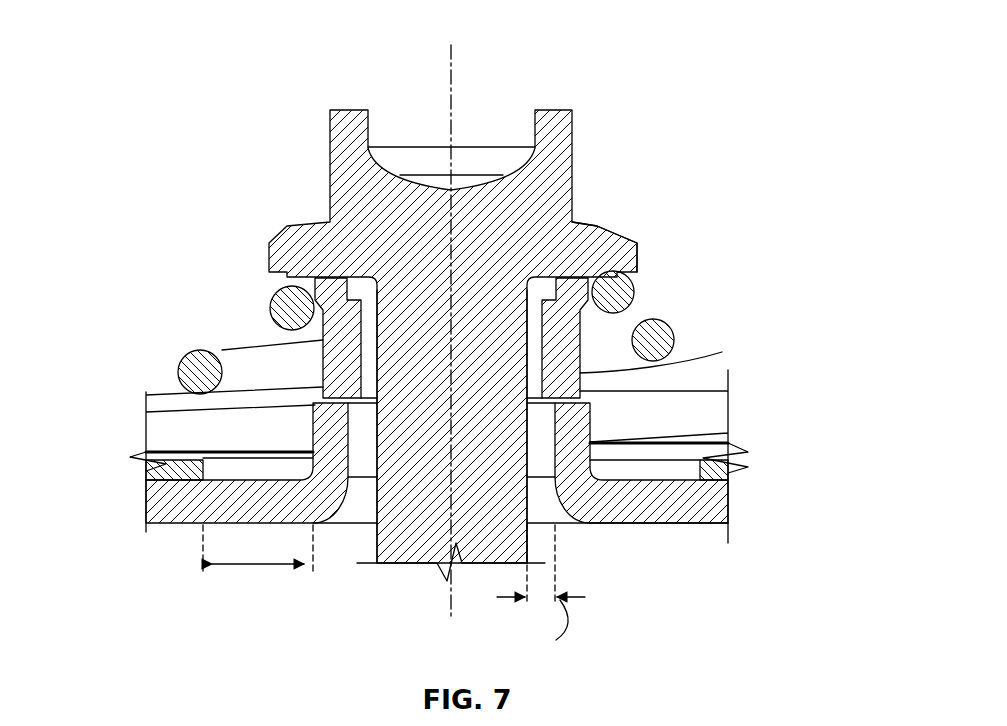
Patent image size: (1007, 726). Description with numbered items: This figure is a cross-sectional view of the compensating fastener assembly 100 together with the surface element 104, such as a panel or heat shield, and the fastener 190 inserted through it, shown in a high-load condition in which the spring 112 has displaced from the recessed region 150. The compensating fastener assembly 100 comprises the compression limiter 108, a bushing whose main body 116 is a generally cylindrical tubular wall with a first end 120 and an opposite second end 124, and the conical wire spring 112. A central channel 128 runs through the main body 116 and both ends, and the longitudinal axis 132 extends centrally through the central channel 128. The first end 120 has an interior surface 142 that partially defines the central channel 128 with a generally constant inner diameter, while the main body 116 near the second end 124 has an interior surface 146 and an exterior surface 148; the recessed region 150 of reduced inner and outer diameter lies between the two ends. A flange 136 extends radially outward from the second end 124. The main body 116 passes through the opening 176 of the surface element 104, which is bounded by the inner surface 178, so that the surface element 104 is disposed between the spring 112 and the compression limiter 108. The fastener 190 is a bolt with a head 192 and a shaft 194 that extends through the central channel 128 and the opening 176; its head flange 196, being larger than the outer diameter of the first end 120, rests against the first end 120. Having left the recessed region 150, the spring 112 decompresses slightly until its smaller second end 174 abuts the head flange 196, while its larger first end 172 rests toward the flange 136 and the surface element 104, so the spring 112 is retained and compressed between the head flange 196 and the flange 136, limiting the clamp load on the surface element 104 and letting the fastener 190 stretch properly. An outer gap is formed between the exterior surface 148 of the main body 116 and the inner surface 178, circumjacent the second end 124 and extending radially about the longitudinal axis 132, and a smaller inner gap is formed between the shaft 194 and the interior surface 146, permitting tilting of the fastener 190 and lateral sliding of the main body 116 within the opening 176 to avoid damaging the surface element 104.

The compensating fastener assembly 100 is at (128, 70).
The longitudinal axis 132 is at (447, 64).
The fastener 190 is at (340, 168).
The head 192 is at (552, 135).
The shaft 194 is at (508, 510).
The interior surface 142 is at (358, 292).
The exterior surface 148 is at (320, 372).
The first end 120 is at (560, 278).
The head flange 196 is at (622, 248).
The second end 174 is at (622, 290).
The recessed region 150 is at (655, 303).
The opening 176 is at (255, 416).
The spring 112 is at (185, 378).
The main body 116 is at (592, 422).
The interior surface 146 is at (542, 455).
The inner surface 178 is at (218, 470).
The first end 172 is at (155, 480).
The surface element 104 is at (722, 477).
The compression limiter 108 is at (178, 505).
The second end 124 is at (600, 500).
The flange 136 is at (682, 507).
The central channel 128 is at (338, 600).